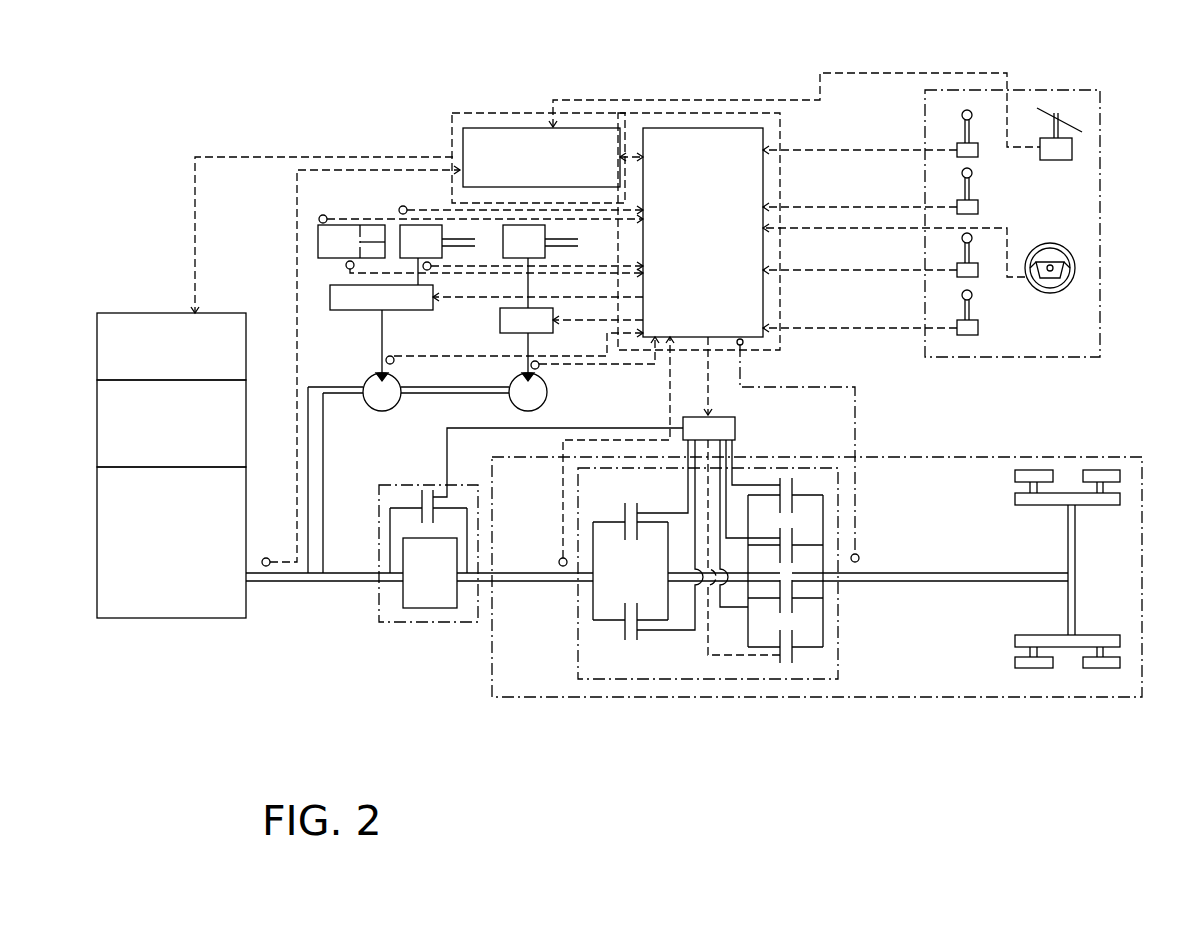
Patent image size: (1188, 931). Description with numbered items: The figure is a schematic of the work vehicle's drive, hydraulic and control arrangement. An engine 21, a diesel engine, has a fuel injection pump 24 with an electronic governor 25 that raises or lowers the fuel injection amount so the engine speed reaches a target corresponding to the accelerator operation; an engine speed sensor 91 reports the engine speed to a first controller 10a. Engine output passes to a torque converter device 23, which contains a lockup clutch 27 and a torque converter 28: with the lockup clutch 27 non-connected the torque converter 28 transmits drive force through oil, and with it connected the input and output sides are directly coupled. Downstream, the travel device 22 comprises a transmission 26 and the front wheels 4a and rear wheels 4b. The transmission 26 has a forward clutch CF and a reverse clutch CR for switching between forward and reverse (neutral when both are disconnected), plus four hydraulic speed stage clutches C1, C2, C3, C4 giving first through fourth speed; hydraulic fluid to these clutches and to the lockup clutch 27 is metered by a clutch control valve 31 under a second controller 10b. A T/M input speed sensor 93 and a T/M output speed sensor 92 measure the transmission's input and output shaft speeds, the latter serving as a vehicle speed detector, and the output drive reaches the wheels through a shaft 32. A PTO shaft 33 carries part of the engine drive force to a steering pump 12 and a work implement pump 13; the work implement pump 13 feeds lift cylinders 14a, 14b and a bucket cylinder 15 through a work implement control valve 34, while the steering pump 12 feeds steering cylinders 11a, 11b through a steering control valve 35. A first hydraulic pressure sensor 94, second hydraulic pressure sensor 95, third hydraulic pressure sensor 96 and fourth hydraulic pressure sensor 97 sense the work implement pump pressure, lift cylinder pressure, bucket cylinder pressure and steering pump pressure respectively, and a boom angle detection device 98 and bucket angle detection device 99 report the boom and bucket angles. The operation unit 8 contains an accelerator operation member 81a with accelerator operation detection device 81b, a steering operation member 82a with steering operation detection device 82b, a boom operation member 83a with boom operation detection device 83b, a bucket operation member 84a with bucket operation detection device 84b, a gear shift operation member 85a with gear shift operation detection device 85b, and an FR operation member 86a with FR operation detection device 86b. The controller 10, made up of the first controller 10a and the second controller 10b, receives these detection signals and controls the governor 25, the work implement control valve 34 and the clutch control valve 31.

The front wheels 4a is at (1034, 470).
The rear wheels 4b is at (1100, 470).
The operation unit 8 is at (965, 248).
The controller 10 is at (746, 200).
The first controller 10a is at (540, 113).
The second controller 10b is at (707, 113).
The steering cylinder 11a is at (504, 289).
The steering cylinder 11b is at (503, 250).
The steering pump 12 is at (547, 398).
The work implement pump 13 is at (366, 382).
The lift cylinder 14a is at (290, 227).
The lift cylinder 14b is at (318, 242).
The bucket cylinder 15 is at (412, 225).
The engine 21 is at (97, 543).
The travel device 22 is at (732, 566).
The torque converter device 23 is at (503, 555).
The fuel injection pump 24 is at (97, 428).
The governor 25 is at (97, 350).
The transmission 26 is at (719, 597).
The lockup clutch 27 is at (418, 497).
The torque converter 28 is at (403, 595).
The clutch control valve 31 is at (735, 425).
The shaft 32 is at (1078, 566).
The PTO shaft 33 is at (308, 415).
The work implement control valve 34 is at (330, 298).
The steering control valve 35 is at (553, 330).
The accelerator operation member 81a is at (1068, 114).
The accelerator operation detection device 81b is at (1102, 121).
The steering operation member 82a is at (962, 246).
The steering operation detection device 82b is at (1043, 258).
The boom operation member 83a is at (960, 116).
The boom operation detection device 83b is at (870, 127).
The bucket operation member 84a is at (962, 175).
The bucket operation detection device 84b is at (895, 189).
The gear shift operation member 85a is at (962, 250).
The gear shift operation detection device 85b is at (901, 274).
The FR operation member 86a is at (962, 305).
The FR operation detection device 86b is at (910, 317).
The engine speed sensor 91 is at (266, 558).
The T/M output speed sensor 92 is at (862, 556).
The T/M input speed sensor 93 is at (559, 562).
The first hydraulic pressure sensor 94 is at (395, 362).
The second hydraulic pressure sensor 95 is at (346, 266).
The third hydraulic pressure sensor 96 is at (427, 262).
The fourth hydraulic pressure sensor 97 is at (540, 366).
The boom angle detection device 98 is at (319, 217).
The bucket angle detection device 99 is at (399, 210).
The speed stage clutch C1 is at (792, 502).
The speed stage clutch C2 is at (792, 553).
The speed stage clutch C3 is at (792, 607).
The speed stage clutch C4 is at (795, 658).
The forward clutch CF is at (627, 535).
The reverse clutch CR is at (625, 628).